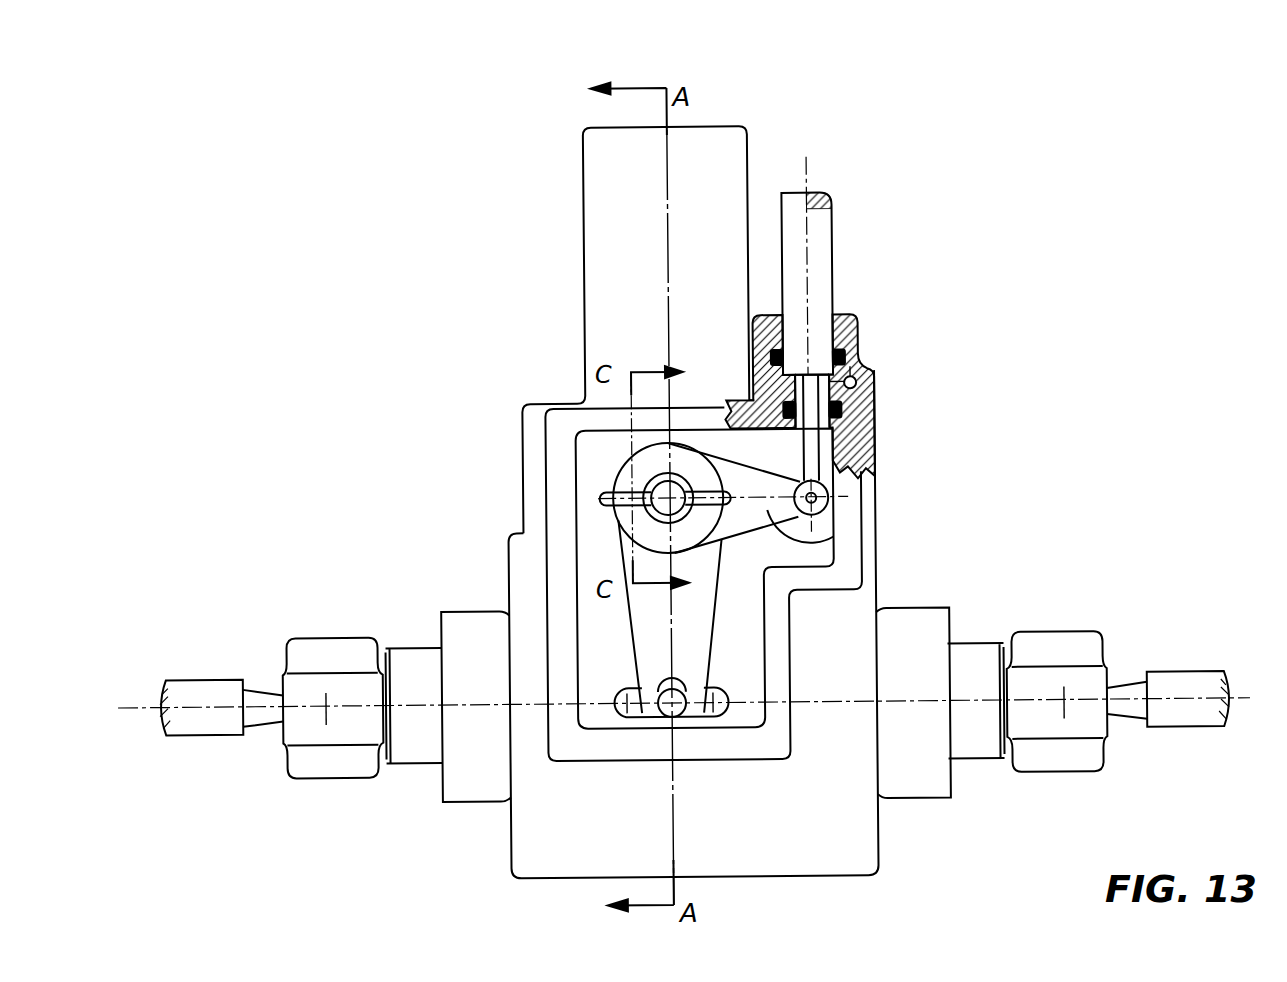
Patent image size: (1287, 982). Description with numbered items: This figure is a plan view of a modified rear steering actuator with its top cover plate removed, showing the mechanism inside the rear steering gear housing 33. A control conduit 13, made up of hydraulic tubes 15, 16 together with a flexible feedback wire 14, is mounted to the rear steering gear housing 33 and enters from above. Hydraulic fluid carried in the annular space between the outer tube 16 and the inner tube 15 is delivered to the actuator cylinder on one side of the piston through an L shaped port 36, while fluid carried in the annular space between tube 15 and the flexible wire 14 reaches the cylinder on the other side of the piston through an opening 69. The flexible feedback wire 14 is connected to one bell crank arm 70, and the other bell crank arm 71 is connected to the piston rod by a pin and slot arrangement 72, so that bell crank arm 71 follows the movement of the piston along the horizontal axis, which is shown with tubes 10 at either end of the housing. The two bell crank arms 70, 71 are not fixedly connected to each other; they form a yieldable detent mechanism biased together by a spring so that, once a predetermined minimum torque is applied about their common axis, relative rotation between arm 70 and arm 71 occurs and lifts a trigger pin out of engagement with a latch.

The tube 10 is at (194, 692).
The control conduit 13 is at (836, 244).
The flexible feedback wire 14 is at (838, 460).
The hydraulic tube 15 is at (833, 455).
The hydraulic tube 16 is at (861, 330).
The rear steering gear housing 33 is at (528, 860).
The L shaped port 36 is at (874, 372).
The opening 69 is at (618, 710).
The bell crank arm 70 is at (805, 546).
The bell crank arm 71 is at (697, 633).
The pin and slot arrangement 72 is at (690, 706).